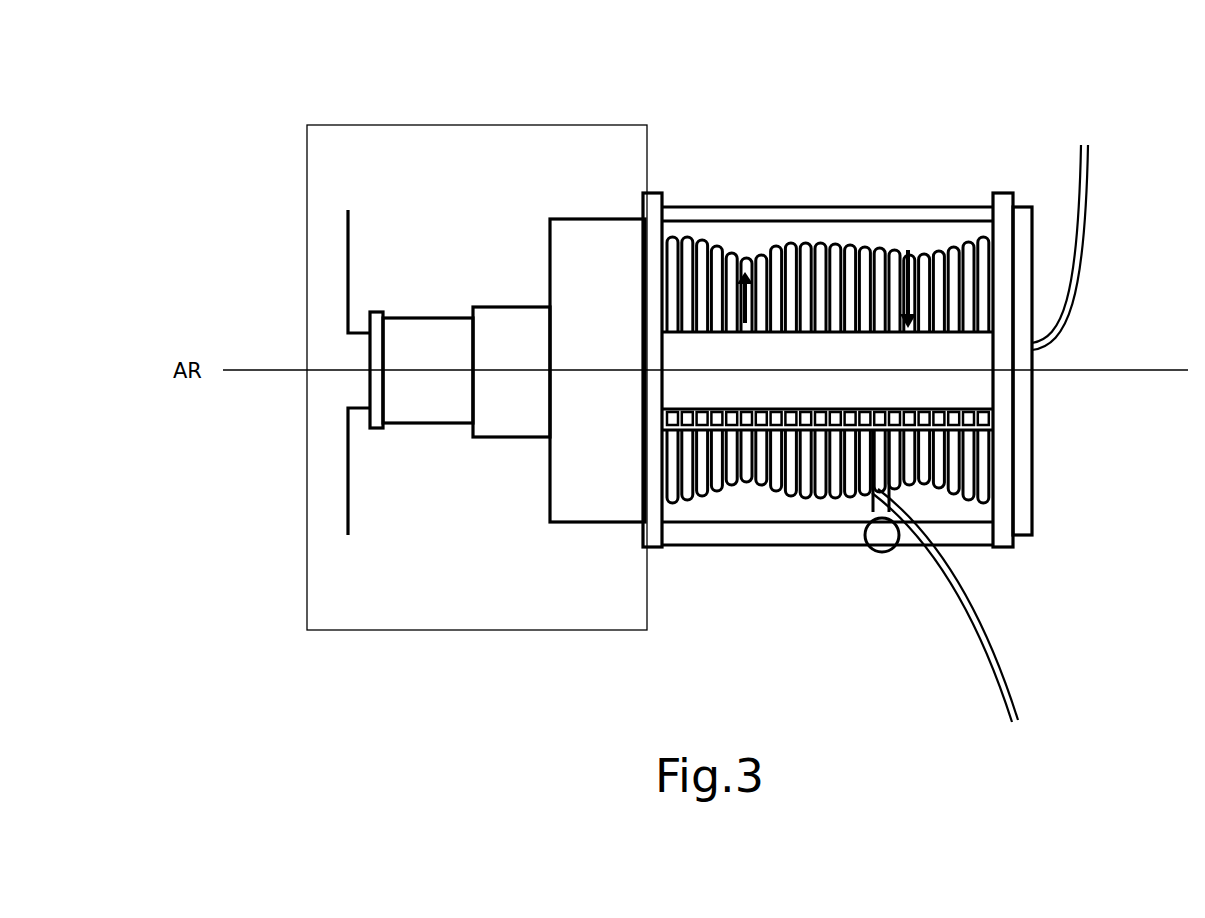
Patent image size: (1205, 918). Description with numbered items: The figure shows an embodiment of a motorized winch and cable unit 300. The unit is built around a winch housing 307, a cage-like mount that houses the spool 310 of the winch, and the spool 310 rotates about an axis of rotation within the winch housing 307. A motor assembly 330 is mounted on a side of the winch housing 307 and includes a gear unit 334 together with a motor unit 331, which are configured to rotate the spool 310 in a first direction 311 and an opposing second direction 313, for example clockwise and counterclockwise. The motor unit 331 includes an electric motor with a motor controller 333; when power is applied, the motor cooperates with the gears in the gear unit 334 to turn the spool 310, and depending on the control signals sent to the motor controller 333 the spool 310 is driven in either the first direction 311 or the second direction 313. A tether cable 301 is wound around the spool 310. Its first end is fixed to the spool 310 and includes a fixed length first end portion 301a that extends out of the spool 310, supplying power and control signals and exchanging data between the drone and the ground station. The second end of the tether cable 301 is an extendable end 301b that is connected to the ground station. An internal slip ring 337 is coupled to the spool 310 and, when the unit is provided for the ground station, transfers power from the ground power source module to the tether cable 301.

The motorized winch and cable unit 300 is at (707, 572).
The tether cable 301 is at (872, 252).
The first end portion 301a is at (1093, 225).
The extendable end 301b is at (995, 634).
The winch housing 307 is at (652, 195).
The spool 310 is at (1003, 268).
The first direction 311 is at (735, 277).
The second direction 313 is at (918, 265).
The motor assembly 330 is at (377, 630).
The motor unit 331 is at (438, 335).
The motor controller 333 is at (378, 318).
The gear unit 334 is at (604, 232).
The internal slip ring 337 is at (1032, 410).